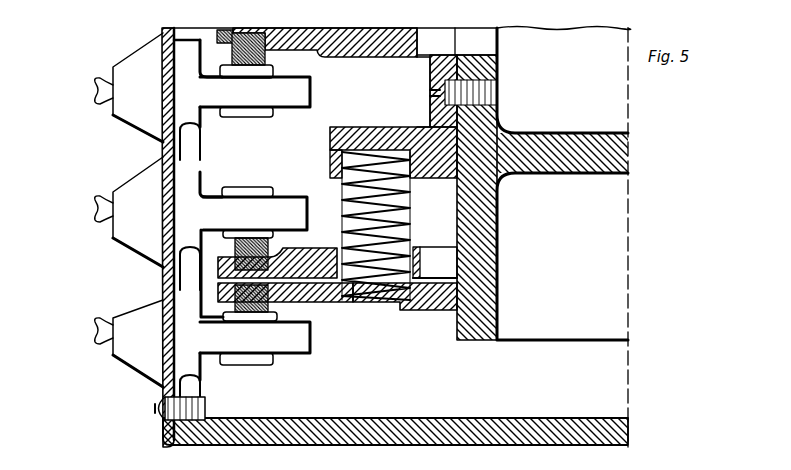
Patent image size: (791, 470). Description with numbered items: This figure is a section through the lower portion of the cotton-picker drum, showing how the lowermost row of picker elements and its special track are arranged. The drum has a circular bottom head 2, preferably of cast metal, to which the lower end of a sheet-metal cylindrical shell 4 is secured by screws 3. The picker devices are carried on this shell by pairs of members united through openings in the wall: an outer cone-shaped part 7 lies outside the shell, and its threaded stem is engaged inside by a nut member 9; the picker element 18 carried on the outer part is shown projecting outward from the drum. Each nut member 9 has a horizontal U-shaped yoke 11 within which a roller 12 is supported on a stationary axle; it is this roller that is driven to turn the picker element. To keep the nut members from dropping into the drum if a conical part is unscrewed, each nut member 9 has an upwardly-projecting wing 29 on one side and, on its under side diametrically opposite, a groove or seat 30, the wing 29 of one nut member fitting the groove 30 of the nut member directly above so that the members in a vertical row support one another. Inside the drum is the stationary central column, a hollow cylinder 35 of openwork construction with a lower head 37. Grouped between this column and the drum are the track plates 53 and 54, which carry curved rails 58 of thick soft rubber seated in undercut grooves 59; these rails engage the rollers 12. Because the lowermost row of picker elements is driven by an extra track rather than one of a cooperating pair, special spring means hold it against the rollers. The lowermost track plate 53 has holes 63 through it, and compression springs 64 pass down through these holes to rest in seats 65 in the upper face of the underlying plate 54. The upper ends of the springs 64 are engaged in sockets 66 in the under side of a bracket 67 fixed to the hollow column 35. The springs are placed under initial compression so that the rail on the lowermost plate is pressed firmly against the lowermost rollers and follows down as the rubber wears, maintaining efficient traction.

The bottom head 2 is at (457, 418).
The screws 3 is at (158, 420).
The cylindrical shell 4 is at (160, 153).
The outer cone-shaped part 7 is at (130, 108).
The nut member 9 is at (201, 210).
The yoke 11 is at (275, 97).
The roller 12 is at (262, 118).
The contact fork 18 is at (95, 80).
The wing 29 is at (193, 145).
The groove or seat 30 is at (160, 140).
The hollow cylinder 35 is at (483, 238).
The lower head 37 is at (572, 133).
The track plate 53 is at (313, 248).
The track plate 54 is at (347, 47).
The curved rails 58 is at (318, 73).
The undercut grooves 59 is at (218, 40).
The holes 63 is at (412, 250).
The compression springs 64 is at (406, 222).
The seats 65 is at (360, 304).
The sockets 66 is at (328, 160).
The bracket 67 is at (383, 127).